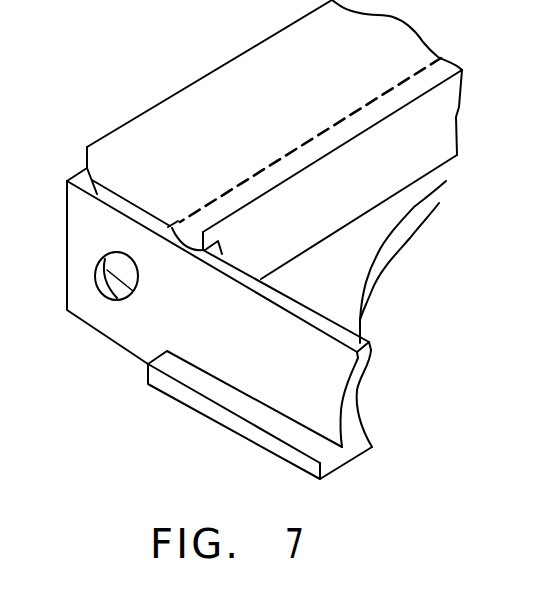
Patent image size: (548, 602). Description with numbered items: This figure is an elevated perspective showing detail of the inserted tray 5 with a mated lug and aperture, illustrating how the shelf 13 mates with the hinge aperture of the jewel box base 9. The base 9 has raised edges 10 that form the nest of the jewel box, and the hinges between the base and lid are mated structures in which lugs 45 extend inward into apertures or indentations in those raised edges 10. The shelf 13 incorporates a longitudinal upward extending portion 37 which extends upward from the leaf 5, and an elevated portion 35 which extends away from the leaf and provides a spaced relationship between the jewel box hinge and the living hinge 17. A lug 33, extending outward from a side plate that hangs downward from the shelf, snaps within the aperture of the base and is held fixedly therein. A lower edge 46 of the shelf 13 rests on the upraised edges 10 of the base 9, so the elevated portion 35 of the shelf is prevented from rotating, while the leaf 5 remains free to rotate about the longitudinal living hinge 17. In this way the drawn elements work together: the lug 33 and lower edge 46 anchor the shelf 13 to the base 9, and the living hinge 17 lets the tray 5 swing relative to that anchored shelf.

The tray 5 is at (118, 152).
The base 9 is at (299, 392).
The raised edges 10 is at (228, 367).
The shelf 13 is at (208, 83).
The living hinge 17 is at (288, 163).
The lug 33 is at (138, 275).
The elevated portion 35 is at (423, 50).
The longitudinal upward extending portion 37 is at (451, 110).
The lugs 45 is at (121, 297).
The lower edge 46 is at (117, 210).